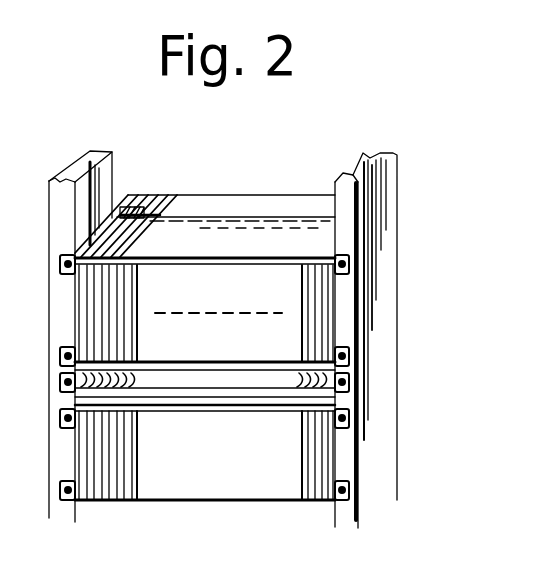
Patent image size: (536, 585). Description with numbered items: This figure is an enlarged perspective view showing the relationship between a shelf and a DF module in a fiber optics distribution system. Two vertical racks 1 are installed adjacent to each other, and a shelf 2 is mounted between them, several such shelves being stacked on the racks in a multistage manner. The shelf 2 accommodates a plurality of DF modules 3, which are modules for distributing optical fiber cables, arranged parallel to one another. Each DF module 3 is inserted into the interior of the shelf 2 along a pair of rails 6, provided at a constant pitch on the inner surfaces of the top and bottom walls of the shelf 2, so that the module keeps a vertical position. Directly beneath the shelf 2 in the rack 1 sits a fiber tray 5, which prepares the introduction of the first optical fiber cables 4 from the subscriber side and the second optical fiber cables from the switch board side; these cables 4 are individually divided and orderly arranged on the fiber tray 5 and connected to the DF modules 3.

The vertical rack 1 is at (387, 245).
The shelf 2 is at (288, 207).
The DF module 3 is at (98, 303).
The first optical fiber cables 4 is at (343, 391).
The fiber tray 5 is at (259, 383).
The rail 6 is at (147, 212).